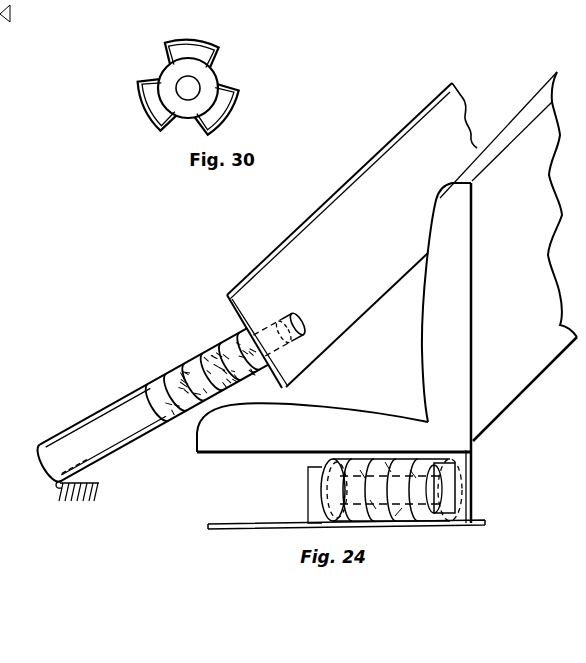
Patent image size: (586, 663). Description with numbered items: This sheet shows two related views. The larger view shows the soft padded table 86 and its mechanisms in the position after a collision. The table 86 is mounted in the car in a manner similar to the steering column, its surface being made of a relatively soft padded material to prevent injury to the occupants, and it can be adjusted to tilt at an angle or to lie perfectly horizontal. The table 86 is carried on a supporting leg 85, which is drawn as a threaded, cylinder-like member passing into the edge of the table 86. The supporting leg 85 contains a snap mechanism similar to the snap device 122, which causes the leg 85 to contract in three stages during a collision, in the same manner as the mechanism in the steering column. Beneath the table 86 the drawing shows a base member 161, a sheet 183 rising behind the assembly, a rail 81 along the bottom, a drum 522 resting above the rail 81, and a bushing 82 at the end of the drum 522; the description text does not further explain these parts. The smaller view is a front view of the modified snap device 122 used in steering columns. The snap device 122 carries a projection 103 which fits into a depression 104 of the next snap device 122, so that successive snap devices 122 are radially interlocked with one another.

In FIG. 30, the snap device 122 is at (145, 134).
In FIG. 30, the depression 104 is at (217, 68).
In FIG. 30, the projection 103 is at (238, 88).
In FIG. 24, the soft padded table 86 is at (352, 252).
In FIG. 24, the supporting leg 85 is at (165, 365).
In FIG. 24, the base shelf 161 is at (334, 427).
In FIG. 24, the sheet 183 is at (547, 368).
In FIG. 24, the bushing 82 is at (457, 490).
In FIG. 24, the drum 522 is at (395, 513).
In FIG. 24, the rail 81 is at (478, 527).